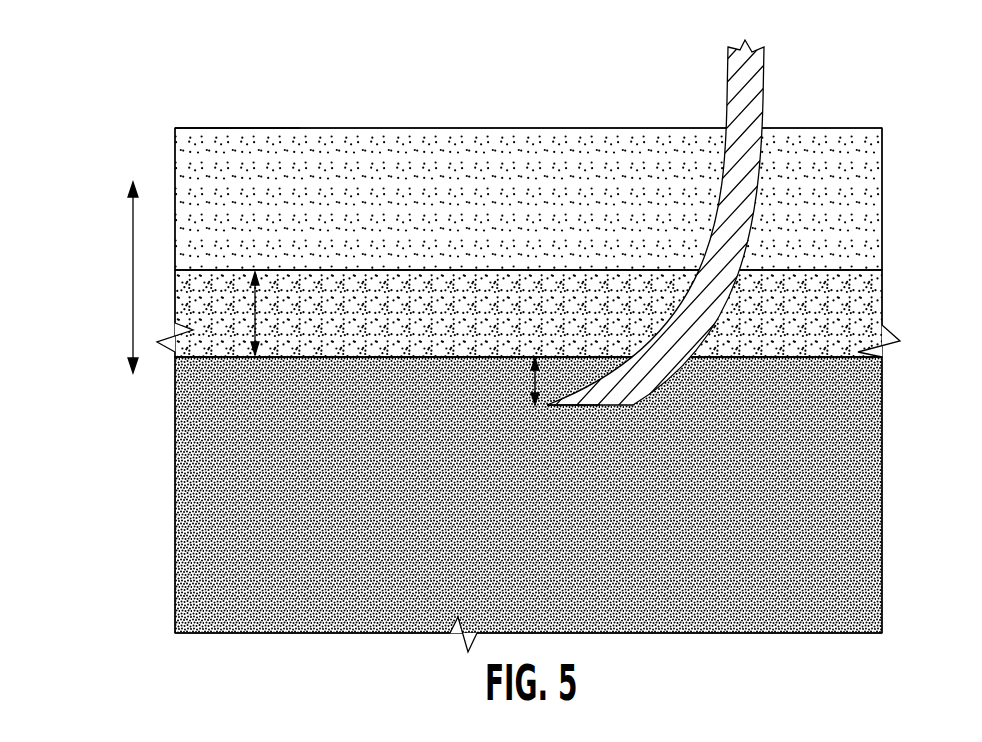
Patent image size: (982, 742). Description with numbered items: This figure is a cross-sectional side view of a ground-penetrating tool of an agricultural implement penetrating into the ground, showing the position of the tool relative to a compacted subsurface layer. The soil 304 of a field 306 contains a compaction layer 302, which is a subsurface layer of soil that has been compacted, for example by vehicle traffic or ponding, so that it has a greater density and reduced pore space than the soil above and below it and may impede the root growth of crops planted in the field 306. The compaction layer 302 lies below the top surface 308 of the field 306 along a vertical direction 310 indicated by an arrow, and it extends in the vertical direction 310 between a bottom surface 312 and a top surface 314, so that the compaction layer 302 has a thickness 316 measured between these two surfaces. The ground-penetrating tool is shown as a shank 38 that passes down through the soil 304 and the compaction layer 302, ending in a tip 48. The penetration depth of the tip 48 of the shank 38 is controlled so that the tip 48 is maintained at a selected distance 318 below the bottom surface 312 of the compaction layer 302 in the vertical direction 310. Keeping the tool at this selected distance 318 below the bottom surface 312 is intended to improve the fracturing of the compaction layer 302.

The shank 38 is at (728, 101).
The tip 48 is at (549, 406).
The compaction layer 302 is at (459, 266).
The soil 304 is at (553, 218).
The field 306 is at (368, 118).
The top surface 308 is at (265, 128).
The vertical direction 310 is at (133, 283).
The bottom surface 312 is at (358, 358).
The top surface 314 is at (388, 268).
The thickness 316 is at (258, 316).
The selected distance 318 is at (535, 385).